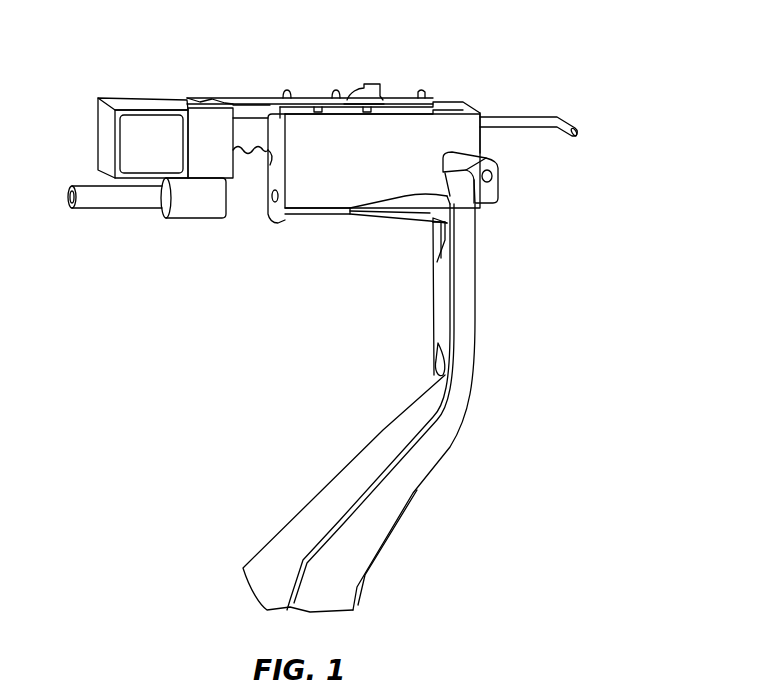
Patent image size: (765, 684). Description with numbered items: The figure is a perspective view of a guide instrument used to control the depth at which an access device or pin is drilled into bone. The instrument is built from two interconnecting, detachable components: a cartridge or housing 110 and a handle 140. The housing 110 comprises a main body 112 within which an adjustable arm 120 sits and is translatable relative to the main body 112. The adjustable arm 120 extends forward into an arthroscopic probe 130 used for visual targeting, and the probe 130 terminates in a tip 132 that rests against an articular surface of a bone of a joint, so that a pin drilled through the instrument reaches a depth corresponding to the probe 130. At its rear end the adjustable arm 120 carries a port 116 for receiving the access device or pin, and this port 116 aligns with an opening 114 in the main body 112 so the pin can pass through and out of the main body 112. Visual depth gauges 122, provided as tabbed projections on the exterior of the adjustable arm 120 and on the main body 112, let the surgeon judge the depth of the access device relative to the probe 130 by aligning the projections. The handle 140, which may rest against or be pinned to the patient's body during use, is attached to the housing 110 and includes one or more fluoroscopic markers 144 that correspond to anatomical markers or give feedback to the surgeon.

The housing 110 is at (457, 86).
The main body 112 is at (388, 164).
The opening 114 is at (273, 204).
The port 116 is at (113, 202).
The adjustable arm 120 is at (152, 124).
The visual depth gauges 122 is at (287, 97).
The arthroscopic probe 130 is at (533, 117).
The tip 132 is at (577, 136).
The handle 140 is at (465, 358).
The fluoroscopic markers 144 is at (488, 195).